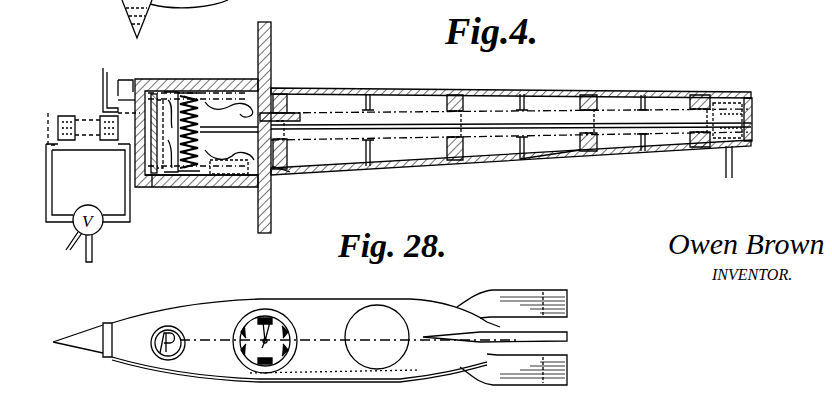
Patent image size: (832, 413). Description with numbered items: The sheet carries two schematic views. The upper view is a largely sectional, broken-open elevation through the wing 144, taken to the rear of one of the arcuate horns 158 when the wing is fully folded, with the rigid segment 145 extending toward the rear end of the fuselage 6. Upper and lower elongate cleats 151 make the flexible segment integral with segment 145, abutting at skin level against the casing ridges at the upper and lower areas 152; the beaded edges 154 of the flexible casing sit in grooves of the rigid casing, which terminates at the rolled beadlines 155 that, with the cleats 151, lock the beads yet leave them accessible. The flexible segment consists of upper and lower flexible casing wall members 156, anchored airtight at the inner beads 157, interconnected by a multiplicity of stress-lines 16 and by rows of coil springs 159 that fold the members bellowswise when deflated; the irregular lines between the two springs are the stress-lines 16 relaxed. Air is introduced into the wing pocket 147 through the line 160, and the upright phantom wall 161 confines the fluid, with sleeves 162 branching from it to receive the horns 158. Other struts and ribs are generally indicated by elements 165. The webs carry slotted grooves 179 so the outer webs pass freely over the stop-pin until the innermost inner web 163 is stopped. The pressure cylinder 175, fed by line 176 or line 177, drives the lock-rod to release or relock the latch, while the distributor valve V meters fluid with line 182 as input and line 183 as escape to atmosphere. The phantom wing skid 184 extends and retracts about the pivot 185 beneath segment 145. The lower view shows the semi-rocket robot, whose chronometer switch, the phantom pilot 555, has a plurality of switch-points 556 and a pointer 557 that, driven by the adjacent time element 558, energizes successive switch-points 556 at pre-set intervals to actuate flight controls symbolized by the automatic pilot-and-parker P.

In FIG. 4, the fuselage 6 is at (272, 213).
In FIG. 4, the stress-lines 16 is at (204, 135).
In FIG. 4, the wing 144 is at (534, 163).
In FIG. 4, the segment 145 is at (484, 88).
In FIG. 4, the wing pocket 147 is at (151, 192).
In FIG. 4, the elongate cleats 151 is at (236, 79).
In FIG. 4, the upper and lower areas 152 is at (282, 94).
In FIG. 4, the beaded edges 154 is at (232, 176).
In FIG. 4, the rolled beadlines 155 is at (180, 93).
In FIG. 4, the flexible casing wall members 156 is at (173, 92).
In FIG. 4, the inner beads 157 is at (159, 175).
In FIG. 4, the horns 158 is at (395, 124).
In FIG. 4, the coil springs 159 is at (106, 94).
In FIG. 4, the line 160 is at (116, 80).
In FIG. 4, the airtight wall member 161 is at (285, 171).
In FIG. 4, the sleeves 162 is at (388, 141).
In FIG. 4, the inner web 163 is at (285, 154).
In FIG. 4, the struts, ribs, torsion braces, spars 165 is at (360, 94).
In FIG. 4, the pressure cylinder 175 is at (68, 116).
In FIG. 4, the line 176 is at (124, 179).
In FIG. 4, the line 177 is at (54, 163).
In FIG. 4, the slotted grooves 179 is at (598, 122).
In FIG. 4, the line 182 is at (94, 262).
In FIG. 4, the line 183 is at (68, 250).
In FIG. 4, the wing skid 184 is at (733, 164).
In FIG. 4, the pivot 185 is at (753, 119).
In FIG. 28, the phantom pilot 555 is at (267, 308).
In FIG. 28, the switch-points 556 is at (284, 312).
In FIG. 28, the pointer 557 is at (258, 332).
In FIG. 28, the time element 558 is at (398, 312).
In FIG. 28, the automatic pilot-and-parker P is at (152, 332).